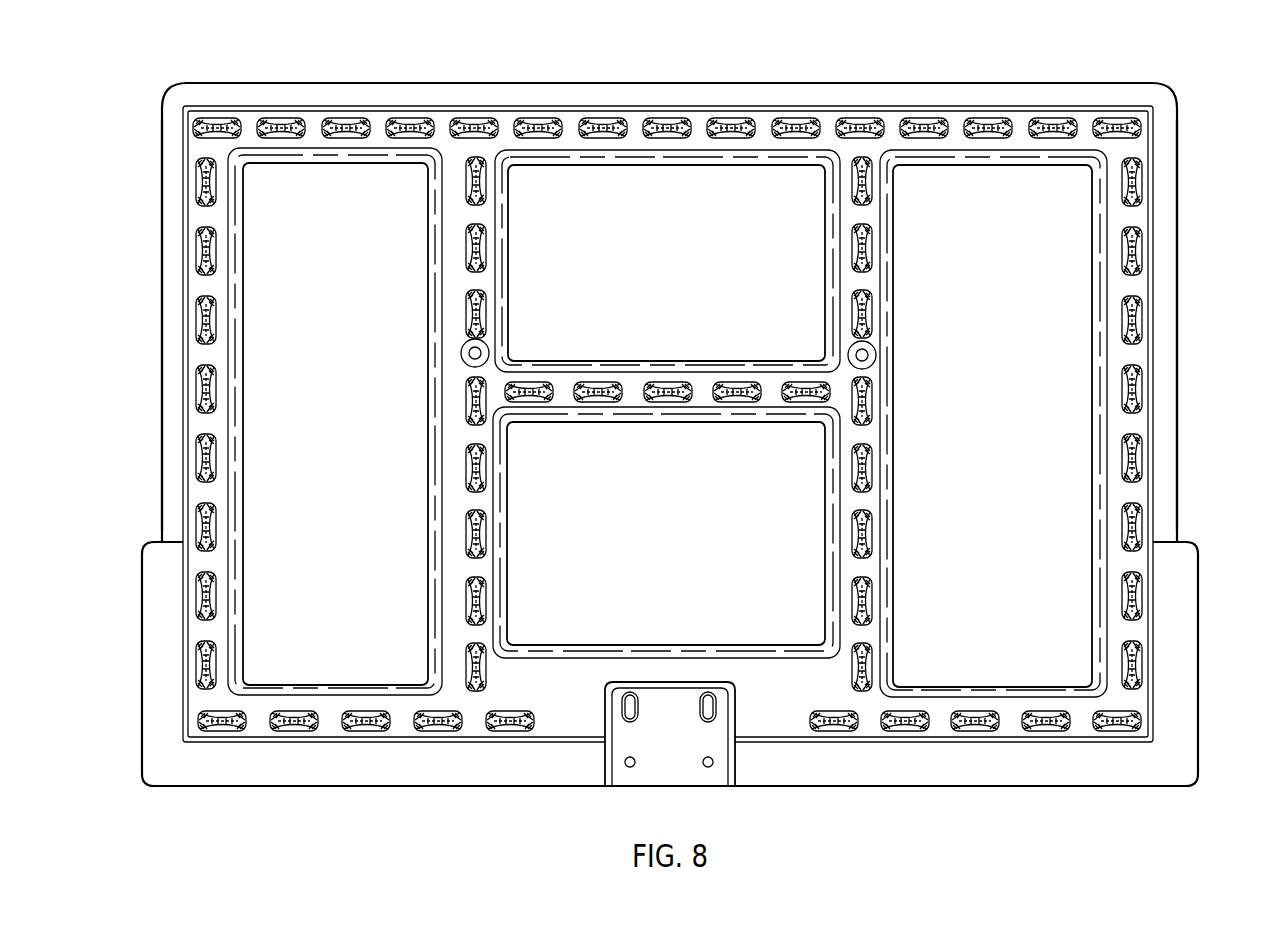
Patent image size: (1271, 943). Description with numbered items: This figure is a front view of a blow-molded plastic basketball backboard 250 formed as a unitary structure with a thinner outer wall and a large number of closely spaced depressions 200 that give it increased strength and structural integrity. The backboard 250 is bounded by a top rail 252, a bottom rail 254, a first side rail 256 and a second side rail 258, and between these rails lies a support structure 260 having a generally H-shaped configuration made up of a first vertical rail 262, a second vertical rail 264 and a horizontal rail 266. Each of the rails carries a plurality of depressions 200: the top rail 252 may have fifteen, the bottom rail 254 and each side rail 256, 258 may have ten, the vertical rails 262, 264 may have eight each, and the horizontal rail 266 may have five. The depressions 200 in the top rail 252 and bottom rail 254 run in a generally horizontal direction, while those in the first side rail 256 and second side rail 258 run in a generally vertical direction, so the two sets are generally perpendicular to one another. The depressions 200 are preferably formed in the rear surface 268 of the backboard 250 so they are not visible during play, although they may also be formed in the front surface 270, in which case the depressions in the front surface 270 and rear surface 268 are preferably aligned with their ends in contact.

The basketball backboard 250 is at (672, 419).
The top rail 252 is at (668, 82).
The bottom rail 254 is at (400, 727).
The first side rail 256 is at (162, 400).
The second side rail 258 is at (1177, 338).
The support structure 260 is at (907, 357).
The first vertical rail 262 is at (442, 348).
The second vertical rail 264 is at (993, 423).
The horizontal rail 266 is at (670, 405).
The rear surface 268 is at (757, 127).
The front surface 270 is at (723, 82).
The depressions 200 is at (868, 587).